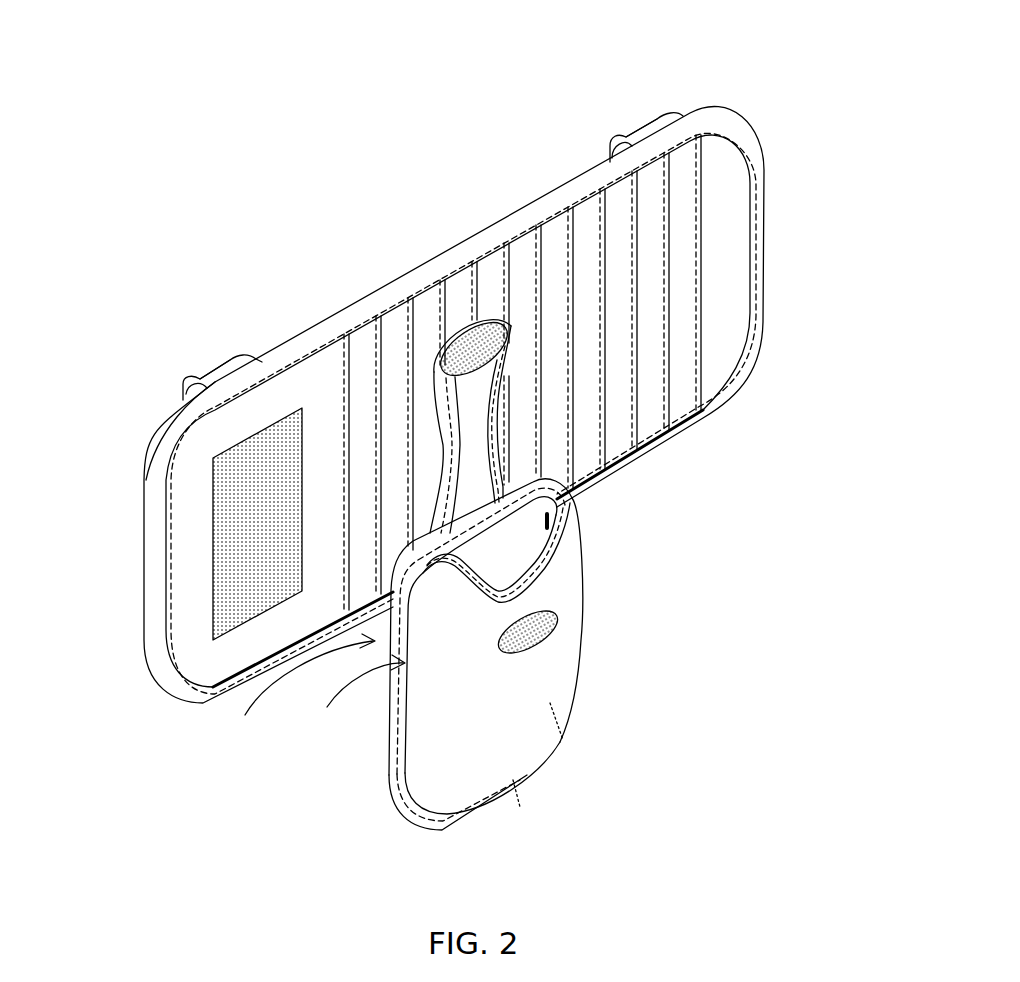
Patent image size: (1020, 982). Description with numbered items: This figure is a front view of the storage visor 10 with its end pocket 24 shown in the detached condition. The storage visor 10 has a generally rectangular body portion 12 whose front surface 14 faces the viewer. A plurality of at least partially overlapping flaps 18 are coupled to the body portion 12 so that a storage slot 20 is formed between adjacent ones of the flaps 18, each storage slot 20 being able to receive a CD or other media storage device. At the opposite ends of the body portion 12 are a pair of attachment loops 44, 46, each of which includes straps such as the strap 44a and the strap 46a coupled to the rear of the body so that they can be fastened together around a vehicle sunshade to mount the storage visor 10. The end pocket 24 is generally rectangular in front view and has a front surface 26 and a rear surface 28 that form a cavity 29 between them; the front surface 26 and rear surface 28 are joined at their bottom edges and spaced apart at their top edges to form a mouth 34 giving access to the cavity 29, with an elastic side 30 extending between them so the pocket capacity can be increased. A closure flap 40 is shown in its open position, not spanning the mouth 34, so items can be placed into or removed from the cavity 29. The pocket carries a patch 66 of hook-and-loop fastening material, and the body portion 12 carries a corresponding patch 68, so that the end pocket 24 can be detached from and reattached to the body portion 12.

The storage visor 10 is at (283, 253).
The body portion 12 is at (732, 160).
The front surface 14 is at (732, 218).
The flaps 18 is at (688, 372).
The storage slot 20 is at (490, 288).
The end pocket 24 is at (520, 692).
The front surface 26 is at (487, 767).
The rear surface 28 is at (398, 698).
The cavity 29 is at (503, 541).
The side 30 is at (340, 695).
The mouth 34 is at (533, 572).
The closure flap 40 is at (467, 445).
The attachment loop 44 is at (630, 133).
The strap 44a is at (650, 120).
The attachment loop 46 is at (195, 378).
The strap 46a is at (214, 370).
The patch 66 is at (292, 692).
The patch 68 is at (240, 578).